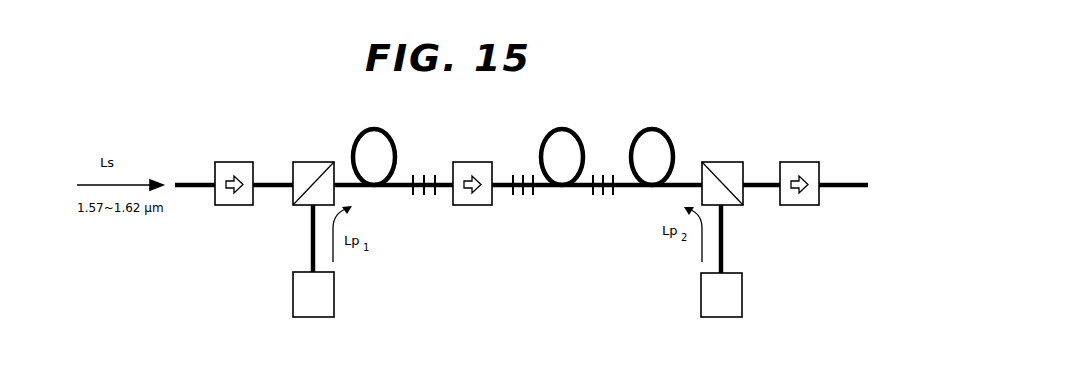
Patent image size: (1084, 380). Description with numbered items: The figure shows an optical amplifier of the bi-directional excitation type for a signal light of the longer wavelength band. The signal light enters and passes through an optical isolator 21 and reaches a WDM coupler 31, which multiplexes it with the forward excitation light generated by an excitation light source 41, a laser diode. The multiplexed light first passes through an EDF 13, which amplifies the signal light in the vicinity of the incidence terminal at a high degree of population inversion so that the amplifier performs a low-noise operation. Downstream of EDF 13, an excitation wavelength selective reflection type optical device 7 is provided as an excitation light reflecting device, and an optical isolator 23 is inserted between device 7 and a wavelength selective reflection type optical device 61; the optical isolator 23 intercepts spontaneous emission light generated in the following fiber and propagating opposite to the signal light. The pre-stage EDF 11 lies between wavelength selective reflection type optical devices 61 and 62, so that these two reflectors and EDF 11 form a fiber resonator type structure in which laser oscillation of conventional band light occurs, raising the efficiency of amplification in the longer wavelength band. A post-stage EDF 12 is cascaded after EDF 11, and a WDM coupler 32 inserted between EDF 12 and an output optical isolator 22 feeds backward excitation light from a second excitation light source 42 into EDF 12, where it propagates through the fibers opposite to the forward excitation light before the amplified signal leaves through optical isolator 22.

The optical isolator 21 is at (216, 162).
The WDM coupler 31 is at (295, 162).
The EDF 13 is at (391, 139).
The excitation wavelength selective reflection type optical device 7 is at (424, 195).
The optical isolator 23 is at (492, 162).
The wavelength selective reflection type optical device 61 is at (523, 195).
The pre-stage EDF 11 is at (580, 139).
The wavelength selective reflection type optical device 62 is at (603, 195).
The post-stage EDF 12 is at (669, 139).
The WDM coupler 32 is at (743, 162).
The optical isolator 22 is at (819, 162).
The excitation light source 41 is at (297, 317).
The excitation light source 42 is at (740, 317).